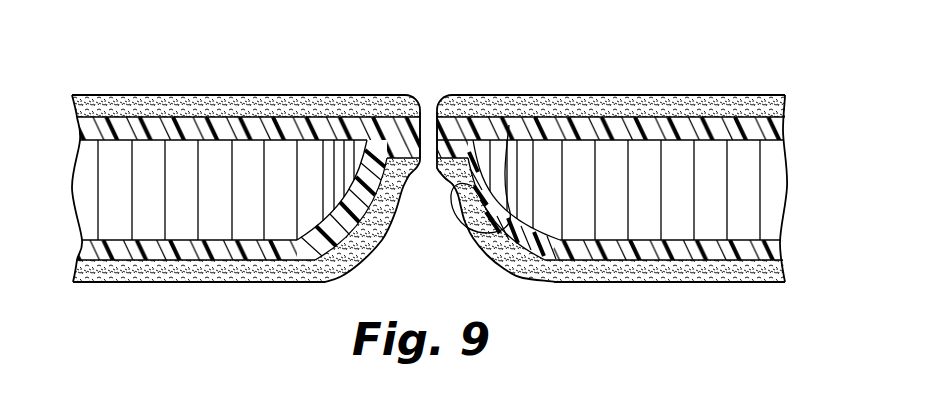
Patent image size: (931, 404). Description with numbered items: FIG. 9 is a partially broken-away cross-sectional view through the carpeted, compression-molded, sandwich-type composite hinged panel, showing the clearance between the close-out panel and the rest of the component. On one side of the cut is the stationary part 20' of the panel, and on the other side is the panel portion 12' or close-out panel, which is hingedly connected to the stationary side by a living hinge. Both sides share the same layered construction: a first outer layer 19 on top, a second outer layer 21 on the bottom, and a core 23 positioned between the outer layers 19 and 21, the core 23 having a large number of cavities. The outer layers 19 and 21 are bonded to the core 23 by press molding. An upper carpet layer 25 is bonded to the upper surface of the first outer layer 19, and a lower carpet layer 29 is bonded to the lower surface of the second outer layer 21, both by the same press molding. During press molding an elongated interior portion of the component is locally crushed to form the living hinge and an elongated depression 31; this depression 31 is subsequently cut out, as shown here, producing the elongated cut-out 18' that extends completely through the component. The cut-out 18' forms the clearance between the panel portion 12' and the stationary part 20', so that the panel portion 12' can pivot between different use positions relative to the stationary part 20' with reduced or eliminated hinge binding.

The stationary part 20' is at (246, 156).
The elongated cut-out 18' is at (446, 93).
The panel portion 12' is at (653, 185).
The elongated depression 31 is at (509, 125).
The upper carpet layer 25 is at (787, 110).
The first outer layer 19 is at (780, 127).
The core 23 is at (787, 185).
The second outer layer 21 is at (780, 252).
The lower carpet layer 29 is at (787, 273).